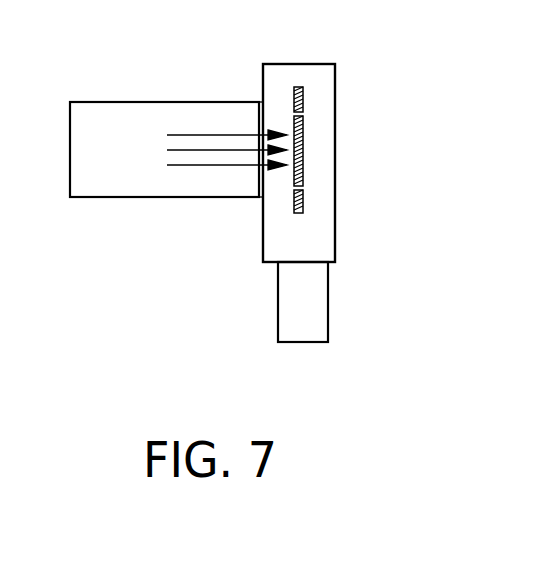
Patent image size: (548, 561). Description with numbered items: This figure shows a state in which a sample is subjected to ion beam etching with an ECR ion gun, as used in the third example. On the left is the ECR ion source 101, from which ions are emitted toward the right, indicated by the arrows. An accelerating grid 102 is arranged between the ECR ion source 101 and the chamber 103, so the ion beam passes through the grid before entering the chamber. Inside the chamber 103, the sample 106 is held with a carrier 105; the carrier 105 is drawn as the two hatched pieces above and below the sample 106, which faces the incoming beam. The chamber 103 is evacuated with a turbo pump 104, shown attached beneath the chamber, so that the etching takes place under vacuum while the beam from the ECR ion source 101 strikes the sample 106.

The ECR ion source 101 is at (120, 112).
The accelerating grid 102 is at (258, 193).
The chamber 103 is at (320, 243).
The turbo pump 104 is at (303, 333).
The carrier 105 is at (303, 97).
The sample 106 is at (303, 148).